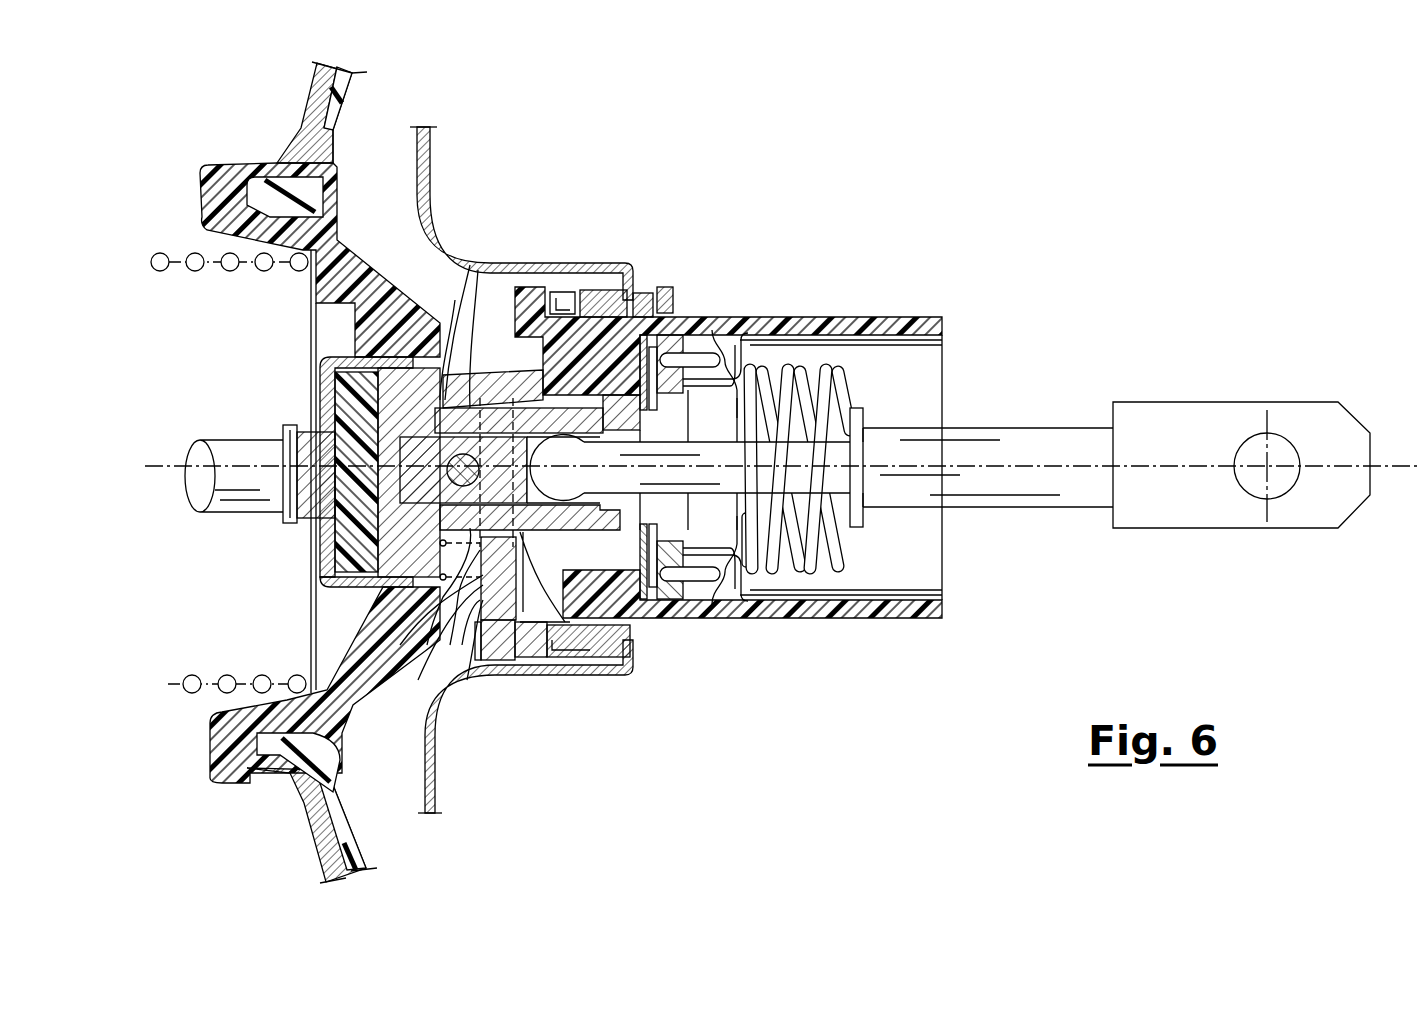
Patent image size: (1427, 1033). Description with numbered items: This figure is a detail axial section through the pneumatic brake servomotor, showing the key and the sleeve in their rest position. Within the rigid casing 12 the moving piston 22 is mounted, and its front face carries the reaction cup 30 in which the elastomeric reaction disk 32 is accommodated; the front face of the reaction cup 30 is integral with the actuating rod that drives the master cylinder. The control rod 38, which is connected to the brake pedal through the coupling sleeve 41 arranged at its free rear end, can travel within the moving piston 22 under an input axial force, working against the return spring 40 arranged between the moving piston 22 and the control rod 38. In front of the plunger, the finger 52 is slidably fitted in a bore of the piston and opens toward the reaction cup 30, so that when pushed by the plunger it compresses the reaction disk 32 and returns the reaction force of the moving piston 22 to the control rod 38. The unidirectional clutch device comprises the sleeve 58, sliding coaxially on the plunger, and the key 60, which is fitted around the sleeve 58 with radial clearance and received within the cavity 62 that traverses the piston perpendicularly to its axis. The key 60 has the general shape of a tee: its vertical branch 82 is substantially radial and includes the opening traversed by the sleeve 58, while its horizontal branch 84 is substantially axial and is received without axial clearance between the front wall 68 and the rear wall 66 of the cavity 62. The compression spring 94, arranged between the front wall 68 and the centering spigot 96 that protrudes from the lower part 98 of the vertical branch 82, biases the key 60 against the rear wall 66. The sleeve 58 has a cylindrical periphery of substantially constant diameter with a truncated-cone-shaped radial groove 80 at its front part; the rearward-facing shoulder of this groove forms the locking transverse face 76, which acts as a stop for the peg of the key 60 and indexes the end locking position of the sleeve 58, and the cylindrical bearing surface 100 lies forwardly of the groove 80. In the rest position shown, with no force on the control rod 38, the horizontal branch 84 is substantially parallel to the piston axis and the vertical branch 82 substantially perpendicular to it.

The rigid casing 12 is at (430, 157).
The moving piston 22 is at (388, 312).
The reaction cup 30 is at (325, 412).
The reaction disk 32 is at (343, 540).
The control rod 38 is at (1093, 443).
The return spring 40 is at (810, 553).
The coupling sleeve 41 is at (1212, 420).
The finger 52 is at (387, 453).
The sleeve 58 is at (570, 645).
The key 60 is at (508, 645).
The cavity 62 is at (497, 325).
The rear wall 66 is at (595, 312).
The front wall 68 is at (440, 347).
The locking transverse face 76 is at (470, 392).
The radial groove 80 is at (452, 602).
The vertical branch 82 is at (502, 663).
The horizontal branch 84 is at (566, 322).
The compression spring 94 is at (356, 557).
The centering spigot 96 is at (475, 585).
The lower part 98 is at (478, 660).
The cylindrical bearing surface 100 is at (338, 395).